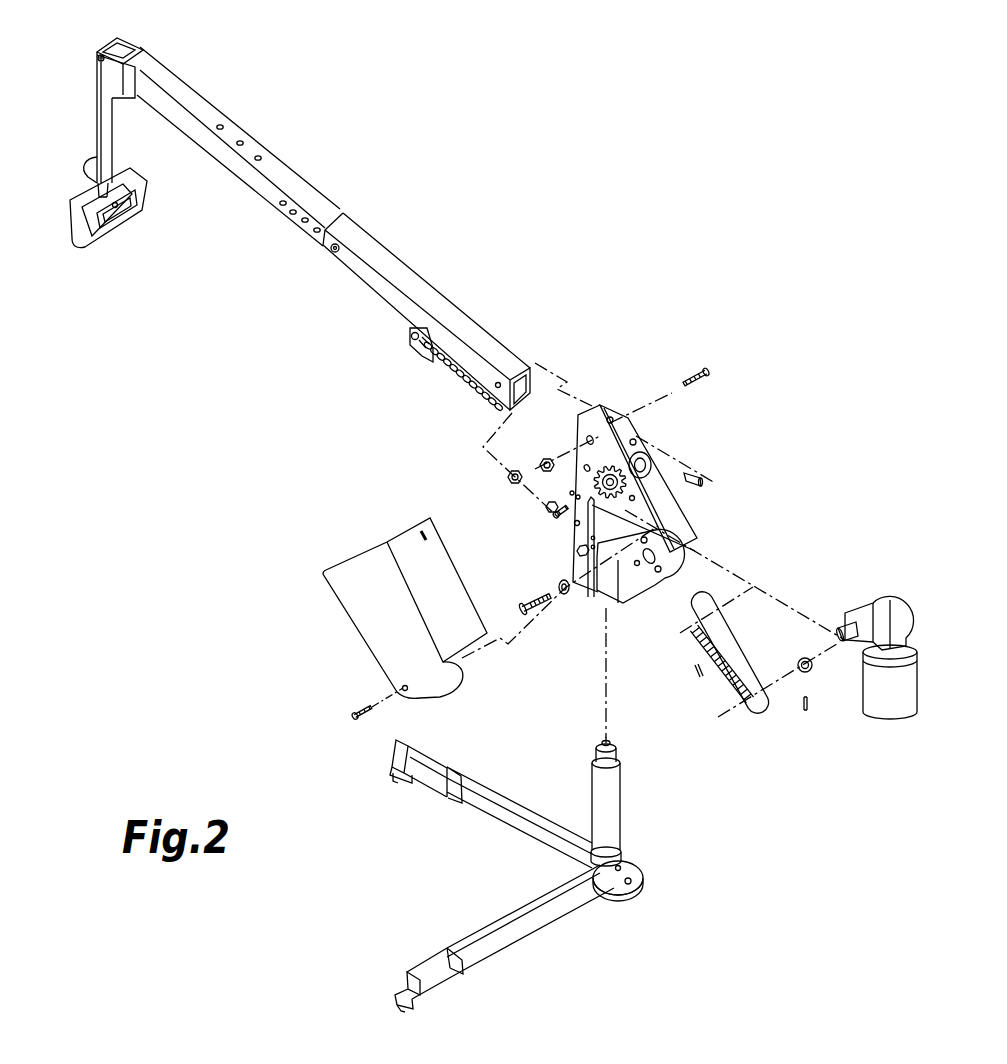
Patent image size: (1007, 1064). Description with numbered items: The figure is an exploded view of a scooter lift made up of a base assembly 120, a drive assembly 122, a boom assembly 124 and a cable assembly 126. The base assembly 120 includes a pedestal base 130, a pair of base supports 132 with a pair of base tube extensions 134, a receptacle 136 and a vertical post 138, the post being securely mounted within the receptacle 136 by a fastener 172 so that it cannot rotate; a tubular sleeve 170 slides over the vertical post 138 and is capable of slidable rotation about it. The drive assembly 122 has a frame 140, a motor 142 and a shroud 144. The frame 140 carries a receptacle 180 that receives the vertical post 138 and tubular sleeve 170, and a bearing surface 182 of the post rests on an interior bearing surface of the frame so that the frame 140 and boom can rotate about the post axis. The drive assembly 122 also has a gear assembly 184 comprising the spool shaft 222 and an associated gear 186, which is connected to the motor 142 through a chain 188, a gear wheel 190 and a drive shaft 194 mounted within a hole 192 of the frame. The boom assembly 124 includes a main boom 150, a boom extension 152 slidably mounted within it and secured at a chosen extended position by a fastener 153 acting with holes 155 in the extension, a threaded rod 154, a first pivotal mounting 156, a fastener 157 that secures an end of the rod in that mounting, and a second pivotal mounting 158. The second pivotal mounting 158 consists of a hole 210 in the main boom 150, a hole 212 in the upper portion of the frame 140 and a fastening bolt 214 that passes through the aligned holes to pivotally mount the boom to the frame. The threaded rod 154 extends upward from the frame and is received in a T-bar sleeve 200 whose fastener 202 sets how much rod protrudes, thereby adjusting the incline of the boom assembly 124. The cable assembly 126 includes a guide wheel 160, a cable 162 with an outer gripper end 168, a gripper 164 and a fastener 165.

The base assembly 120 is at (553, 937).
The drive assembly 122 is at (686, 445).
The boom assembly 124 is at (404, 243).
The cable assembly 126 is at (88, 111).
The pedestal base 130 is at (618, 890).
The base supports 132 is at (500, 792).
The base tube extensions 134 is at (434, 760).
The receptacle 136 is at (623, 861).
The vertical post 138 is at (619, 755).
The frame 140 is at (631, 592).
The motor 142 is at (885, 714).
The shroud 144 is at (360, 618).
The main boom 150 is at (428, 291).
The boom extension 152 is at (278, 173).
The boom bracket 153 is at (135, 80).
The threaded rod 154 is at (456, 377).
The holes 155 is at (290, 220).
The first pivotal mounting 156 is at (408, 333).
The fastener 157 is at (413, 350).
The second pivotal mounting 158 is at (578, 410).
The guide wheel 160 is at (128, 42).
The cable 162 is at (110, 145).
The gripper 164 is at (92, 240).
The fastener 165 is at (124, 220).
The outer gripper end 168 is at (88, 170).
The tubular sleeve 170 is at (612, 802).
The fastener 172 is at (639, 868).
The receptacle 180 is at (607, 622).
The bearing surface 182 is at (609, 740).
The gear assembly 184 is at (630, 507).
The gear 186 is at (599, 410).
The chain 188 is at (728, 682).
The gear wheel 190 is at (816, 668).
The hole 192 is at (690, 565).
The drive shaft 194 is at (840, 618).
The T-bar sleeve 200 is at (560, 517).
The fastener 202 is at (545, 504).
The hole 210 is at (504, 370).
The hole 212 is at (584, 440).
The fastening bolt 214 is at (692, 375).
The spool shaft 222 is at (708, 486).